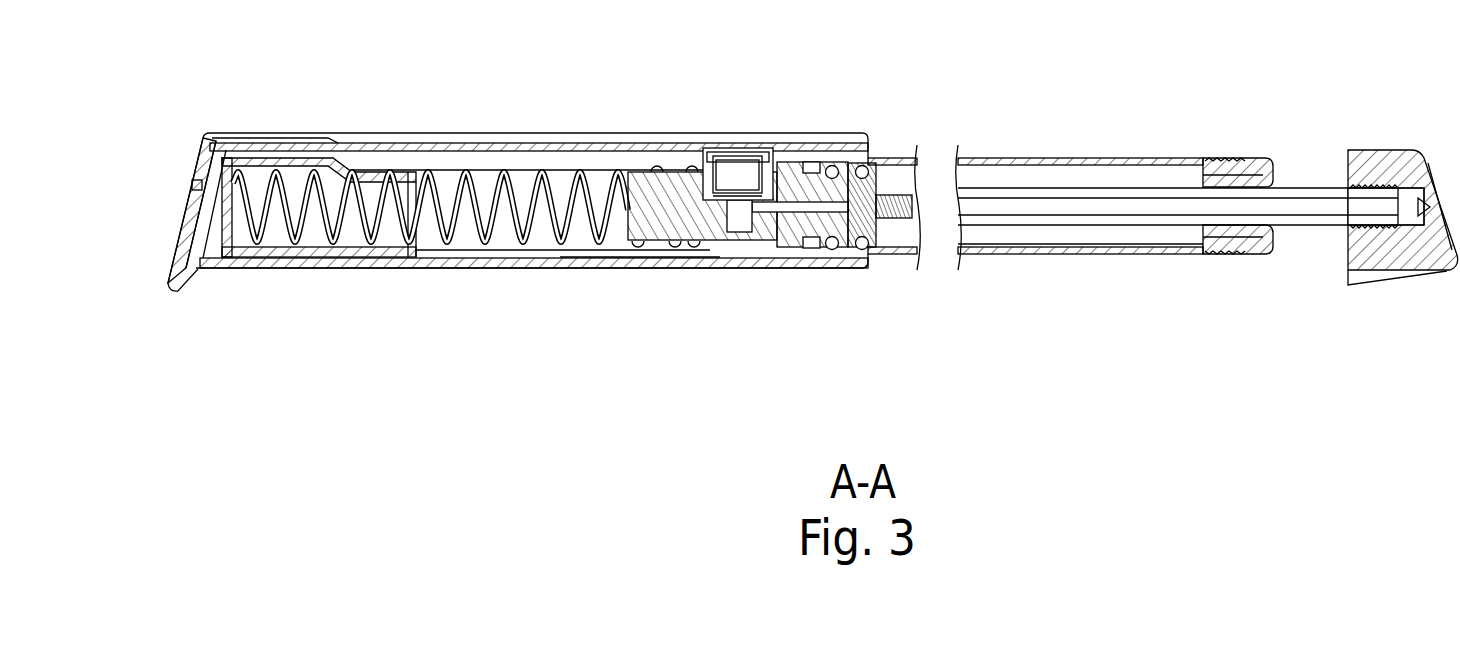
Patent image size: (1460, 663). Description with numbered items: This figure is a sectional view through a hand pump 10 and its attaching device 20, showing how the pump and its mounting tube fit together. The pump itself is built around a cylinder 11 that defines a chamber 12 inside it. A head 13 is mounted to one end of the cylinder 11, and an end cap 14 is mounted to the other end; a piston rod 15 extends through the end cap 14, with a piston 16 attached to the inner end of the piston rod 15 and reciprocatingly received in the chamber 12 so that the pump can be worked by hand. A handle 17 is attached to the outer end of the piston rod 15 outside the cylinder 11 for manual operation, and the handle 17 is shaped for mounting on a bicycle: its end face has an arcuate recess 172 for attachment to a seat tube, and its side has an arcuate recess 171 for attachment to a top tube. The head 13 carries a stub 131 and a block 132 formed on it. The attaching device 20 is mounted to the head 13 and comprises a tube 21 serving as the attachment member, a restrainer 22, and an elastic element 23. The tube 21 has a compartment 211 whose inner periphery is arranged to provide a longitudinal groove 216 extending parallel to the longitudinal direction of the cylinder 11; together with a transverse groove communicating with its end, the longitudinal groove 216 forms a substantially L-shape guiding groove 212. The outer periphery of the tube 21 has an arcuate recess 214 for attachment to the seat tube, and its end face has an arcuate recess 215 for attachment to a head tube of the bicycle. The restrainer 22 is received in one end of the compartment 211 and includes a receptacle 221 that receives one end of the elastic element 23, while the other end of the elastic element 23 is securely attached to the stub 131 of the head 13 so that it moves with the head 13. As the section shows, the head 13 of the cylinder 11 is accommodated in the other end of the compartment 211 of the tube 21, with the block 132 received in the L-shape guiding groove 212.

The hand pump 10 is at (1163, 204).
The cylinder 11 is at (1071, 158).
The chamber 12 is at (1055, 240).
The head 13 is at (738, 257).
The stub 131 is at (668, 230).
The block 132 is at (790, 250).
The end cap 14 is at (1257, 254).
The piston rod 15 is at (1138, 222).
The piston 16 is at (877, 255).
The handle 17 is at (1403, 211).
The arcuate recess 171 is at (1381, 150).
The arcuate recess 172 is at (1432, 147).
The attaching device 20 is at (466, 122).
The tube 21 is at (387, 268).
The compartment 211 is at (603, 167).
The L-shape guiding groove 212 is at (577, 265).
The arcuate recess 214 is at (703, 148).
The arcuate recess 215 is at (200, 178).
The longitudinal groove 216 is at (612, 258).
The restrainer 22 is at (270, 158).
The receptacle 221 is at (287, 262).
The elastic element 23 is at (520, 250).